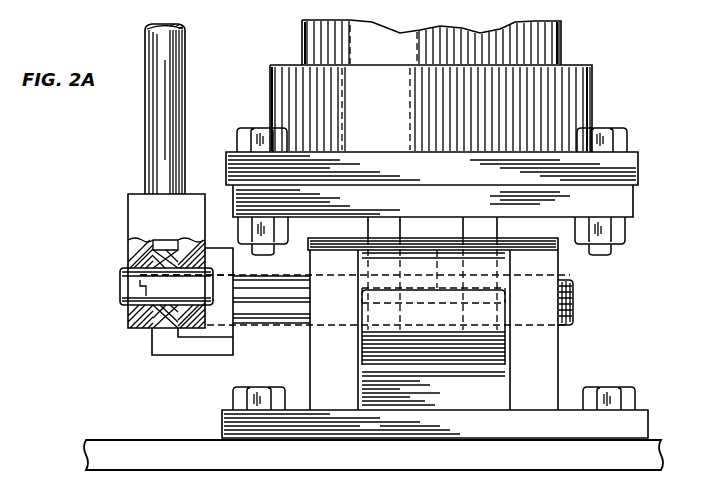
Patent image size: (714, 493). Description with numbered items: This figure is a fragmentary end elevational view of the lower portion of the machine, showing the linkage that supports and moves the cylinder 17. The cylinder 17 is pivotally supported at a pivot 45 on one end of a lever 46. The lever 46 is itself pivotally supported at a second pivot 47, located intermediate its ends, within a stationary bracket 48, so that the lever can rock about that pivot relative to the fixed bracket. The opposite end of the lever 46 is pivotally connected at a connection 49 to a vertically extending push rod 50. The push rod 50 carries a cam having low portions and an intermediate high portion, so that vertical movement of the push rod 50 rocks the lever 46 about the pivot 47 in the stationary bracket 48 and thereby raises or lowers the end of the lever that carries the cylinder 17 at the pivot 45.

The cylinder 17 is at (553, 49).
The pivotal support 45 is at (443, 247).
The lever 46 is at (438, 355).
The pivotal support 47 is at (575, 298).
The stationary bracket 48 is at (552, 382).
The pivotal connection 49 is at (124, 292).
The push rod 50 is at (146, 152).